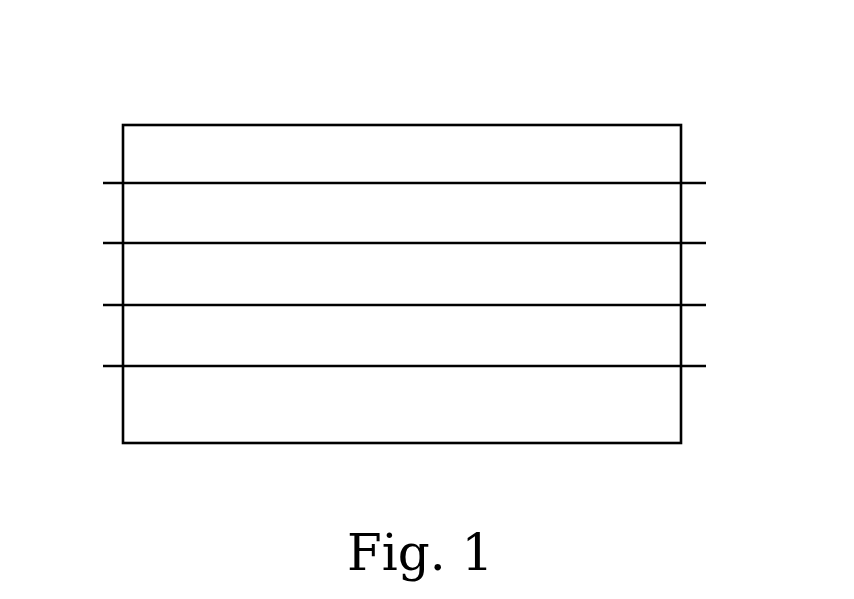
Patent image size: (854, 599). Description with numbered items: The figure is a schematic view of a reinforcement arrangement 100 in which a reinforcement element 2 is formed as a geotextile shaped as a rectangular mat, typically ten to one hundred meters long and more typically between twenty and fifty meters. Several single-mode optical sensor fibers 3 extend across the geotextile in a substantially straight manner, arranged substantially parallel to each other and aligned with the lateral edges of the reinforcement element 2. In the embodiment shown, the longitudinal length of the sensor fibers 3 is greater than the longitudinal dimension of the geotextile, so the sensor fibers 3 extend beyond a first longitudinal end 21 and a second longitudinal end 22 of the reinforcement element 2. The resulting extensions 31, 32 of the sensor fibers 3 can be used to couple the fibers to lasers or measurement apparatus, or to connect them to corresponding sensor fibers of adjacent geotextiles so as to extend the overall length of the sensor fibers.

The laminated body 100 is at (177, 31).
The reinforcement element 2 is at (595, 125).
The single-mode optical sensor fibers 3 is at (323, 183).
The extension of sensor fiber 31 is at (113, 243).
The extension of sensor fiber 32 is at (702, 240).
The first longitudinal end 21 is at (108, 333).
The second longitudinal end 22 is at (695, 333).